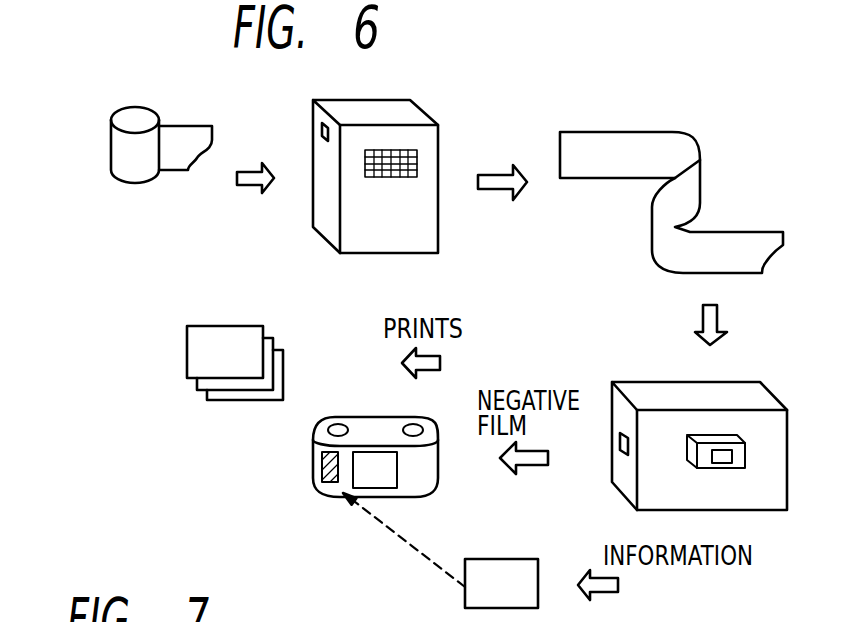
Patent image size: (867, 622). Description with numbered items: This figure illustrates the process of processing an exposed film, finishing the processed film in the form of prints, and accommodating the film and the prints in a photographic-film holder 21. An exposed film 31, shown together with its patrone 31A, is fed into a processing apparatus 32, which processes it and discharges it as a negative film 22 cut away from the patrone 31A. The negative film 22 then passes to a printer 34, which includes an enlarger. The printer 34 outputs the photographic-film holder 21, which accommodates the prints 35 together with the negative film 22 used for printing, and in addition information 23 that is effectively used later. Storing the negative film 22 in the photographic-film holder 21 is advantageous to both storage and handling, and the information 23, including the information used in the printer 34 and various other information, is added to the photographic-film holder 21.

The patrone 31A is at (140, 107).
The exposed film 31 is at (198, 128).
The processing apparatus 32 is at (418, 112).
The negative film 22 is at (640, 132).
The printer 34 is at (643, 382).
The prints 35 is at (187, 340).
The photographic-film holder 21 is at (313, 452).
The information 23 is at (512, 559).